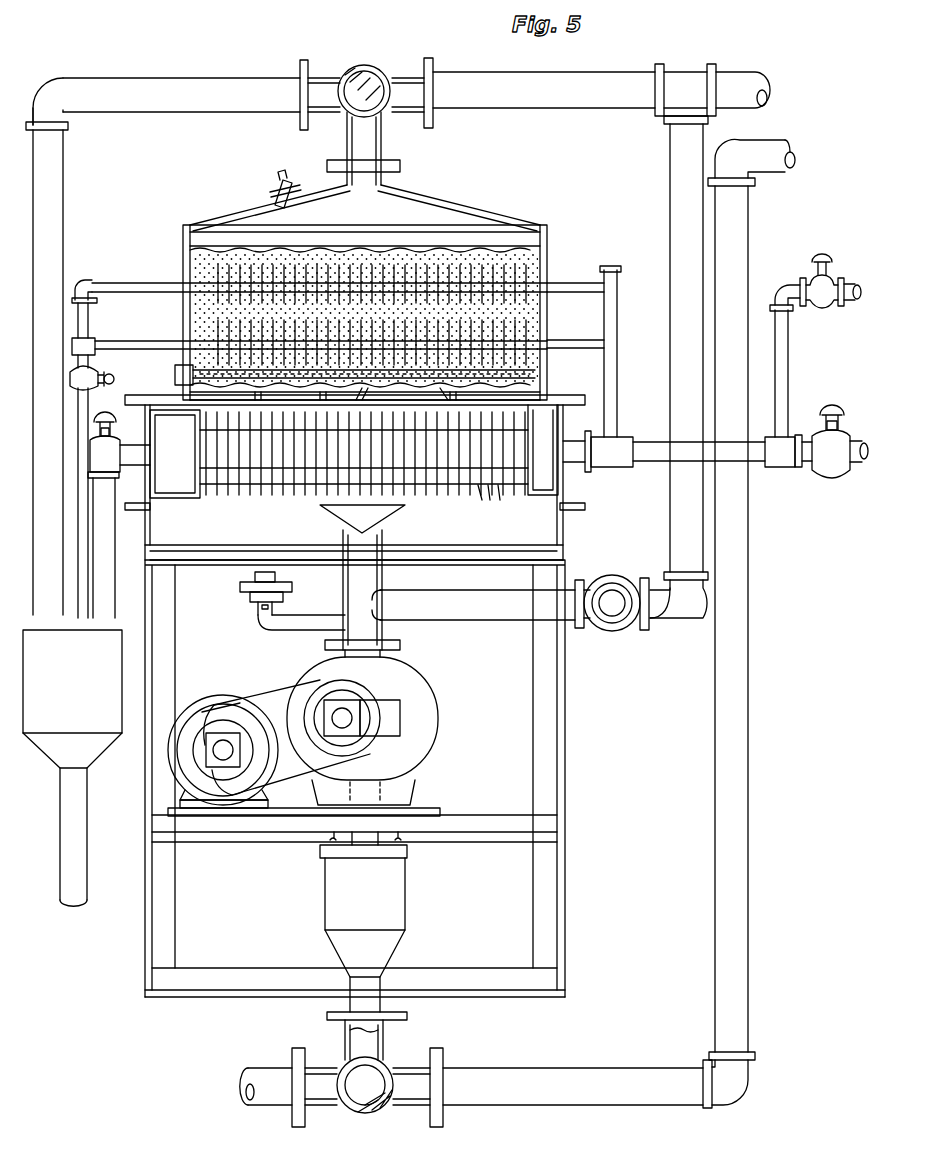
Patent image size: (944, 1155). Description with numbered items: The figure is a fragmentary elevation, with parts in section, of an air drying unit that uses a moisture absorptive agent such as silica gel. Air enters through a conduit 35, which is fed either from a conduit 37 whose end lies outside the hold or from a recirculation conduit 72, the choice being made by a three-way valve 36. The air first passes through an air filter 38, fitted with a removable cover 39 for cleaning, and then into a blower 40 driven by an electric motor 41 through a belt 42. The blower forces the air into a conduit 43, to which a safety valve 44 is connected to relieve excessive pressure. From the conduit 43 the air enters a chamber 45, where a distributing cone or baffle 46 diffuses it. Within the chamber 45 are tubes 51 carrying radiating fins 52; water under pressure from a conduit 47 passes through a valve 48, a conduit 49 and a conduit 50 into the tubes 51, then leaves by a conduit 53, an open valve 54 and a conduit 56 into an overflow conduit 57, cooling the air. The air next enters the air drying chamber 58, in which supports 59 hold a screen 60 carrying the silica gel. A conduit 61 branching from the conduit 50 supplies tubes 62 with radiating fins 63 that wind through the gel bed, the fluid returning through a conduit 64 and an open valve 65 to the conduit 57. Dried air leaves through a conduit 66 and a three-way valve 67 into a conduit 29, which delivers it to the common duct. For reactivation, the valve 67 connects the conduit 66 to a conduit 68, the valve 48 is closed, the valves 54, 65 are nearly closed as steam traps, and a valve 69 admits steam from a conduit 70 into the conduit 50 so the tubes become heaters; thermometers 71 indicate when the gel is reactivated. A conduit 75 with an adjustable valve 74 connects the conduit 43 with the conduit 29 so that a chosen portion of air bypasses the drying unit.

The conduit 29 is at (632, 80).
The conduit 35 is at (375, 1002).
The three-way valve 36 is at (372, 1112).
The conduit 37 is at (272, 1100).
The air filter 38 is at (400, 898).
The removable cover 39 is at (413, 851).
The blower 40 is at (435, 732).
The electric motor 41 is at (208, 695).
The belt 42 is at (270, 700).
The conduit 43 is at (400, 630).
The safety valve 44 is at (240, 580).
The chamber 45 is at (565, 531).
The distributing cone or baffle 46 is at (322, 512).
The conduit 47 is at (845, 280).
The valve 48 is at (826, 302).
The conduit 49 is at (780, 370).
The conduit 50 is at (596, 470).
The tubes 51 is at (450, 485).
The radiating fins 52 is at (492, 490).
The conduit 53 is at (135, 456).
The valve 54 is at (112, 432).
The conduit 56 is at (148, 546).
The conduit 57 is at (93, 722).
The air drying chamber 58 is at (537, 361).
The supports 59 is at (455, 393).
The screen 60 is at (365, 390).
The conduit 61 is at (612, 388).
The tubes 62 is at (178, 290).
The radiating fins 63 is at (520, 318).
The conduit 64 is at (86, 315).
The valve 65 is at (96, 368).
The conduit 66 is at (380, 140).
The three-way valve 67 is at (380, 66).
The conduit 68 is at (236, 78).
The valve 69 is at (833, 405).
The conduit 70 is at (853, 466).
The thermometers 71 is at (283, 185).
The conduit 72 is at (735, 232).
The valve 74 is at (612, 628).
The conduit 75 is at (669, 208).